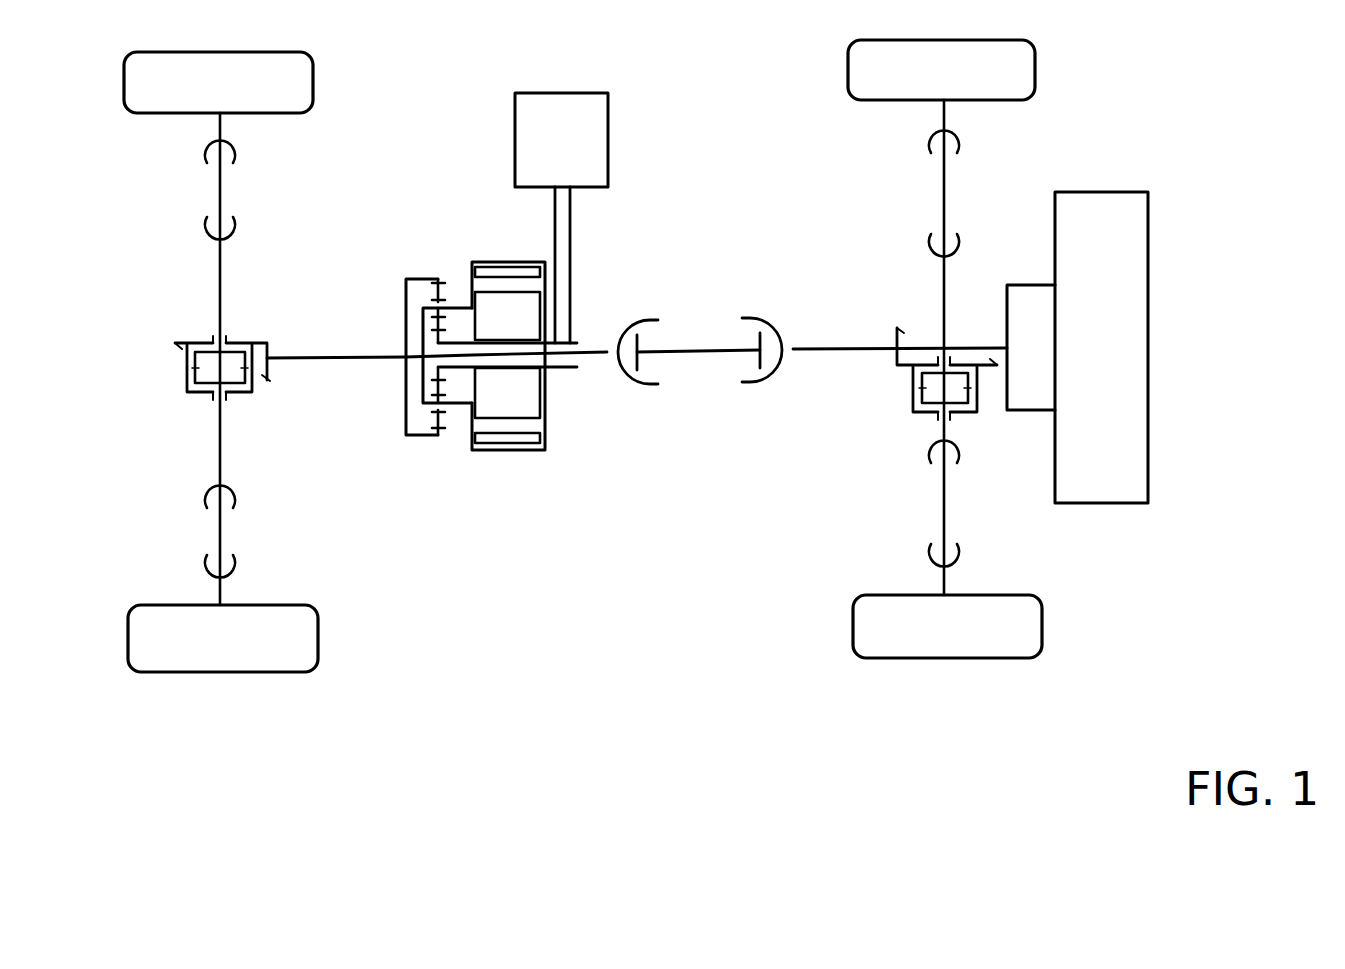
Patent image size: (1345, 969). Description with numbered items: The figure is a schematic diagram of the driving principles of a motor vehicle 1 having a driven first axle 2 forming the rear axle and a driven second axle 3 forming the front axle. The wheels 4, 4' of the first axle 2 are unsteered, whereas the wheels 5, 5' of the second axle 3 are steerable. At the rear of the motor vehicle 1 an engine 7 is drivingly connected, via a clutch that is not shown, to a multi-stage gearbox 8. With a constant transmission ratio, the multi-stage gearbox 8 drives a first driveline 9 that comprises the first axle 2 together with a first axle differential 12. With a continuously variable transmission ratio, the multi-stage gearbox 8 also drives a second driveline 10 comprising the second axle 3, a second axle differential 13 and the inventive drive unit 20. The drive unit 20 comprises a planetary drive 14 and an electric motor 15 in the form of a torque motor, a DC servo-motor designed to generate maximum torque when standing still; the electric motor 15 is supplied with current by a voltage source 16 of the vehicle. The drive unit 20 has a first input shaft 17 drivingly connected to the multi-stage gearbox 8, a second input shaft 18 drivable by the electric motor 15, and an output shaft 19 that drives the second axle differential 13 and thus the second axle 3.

The motor vehicle 1 is at (748, 94).
The first axle 2 is at (945, 283).
The second axle 3 is at (222, 277).
The wheel 4 is at (959, 70).
The wheel 4' is at (969, 623).
The wheel 5 is at (235, 82).
The wheel 5' is at (249, 638).
The engine 7 is at (1122, 195).
The multi-stage gearbox 8 is at (1023, 292).
The first driveline 9 is at (915, 411).
The second driveline 10 is at (235, 408).
The first axle differential 12 is at (927, 413).
The second axle differential 13 is at (205, 393).
The planetary drive 14 is at (430, 238).
The electric motor 15 is at (485, 224).
The voltage source 16 is at (567, 93).
The first input shaft 17 is at (590, 360).
The second input shaft 18 is at (564, 372).
The output shaft 19 is at (375, 368).
The drive unit 20 is at (502, 536).